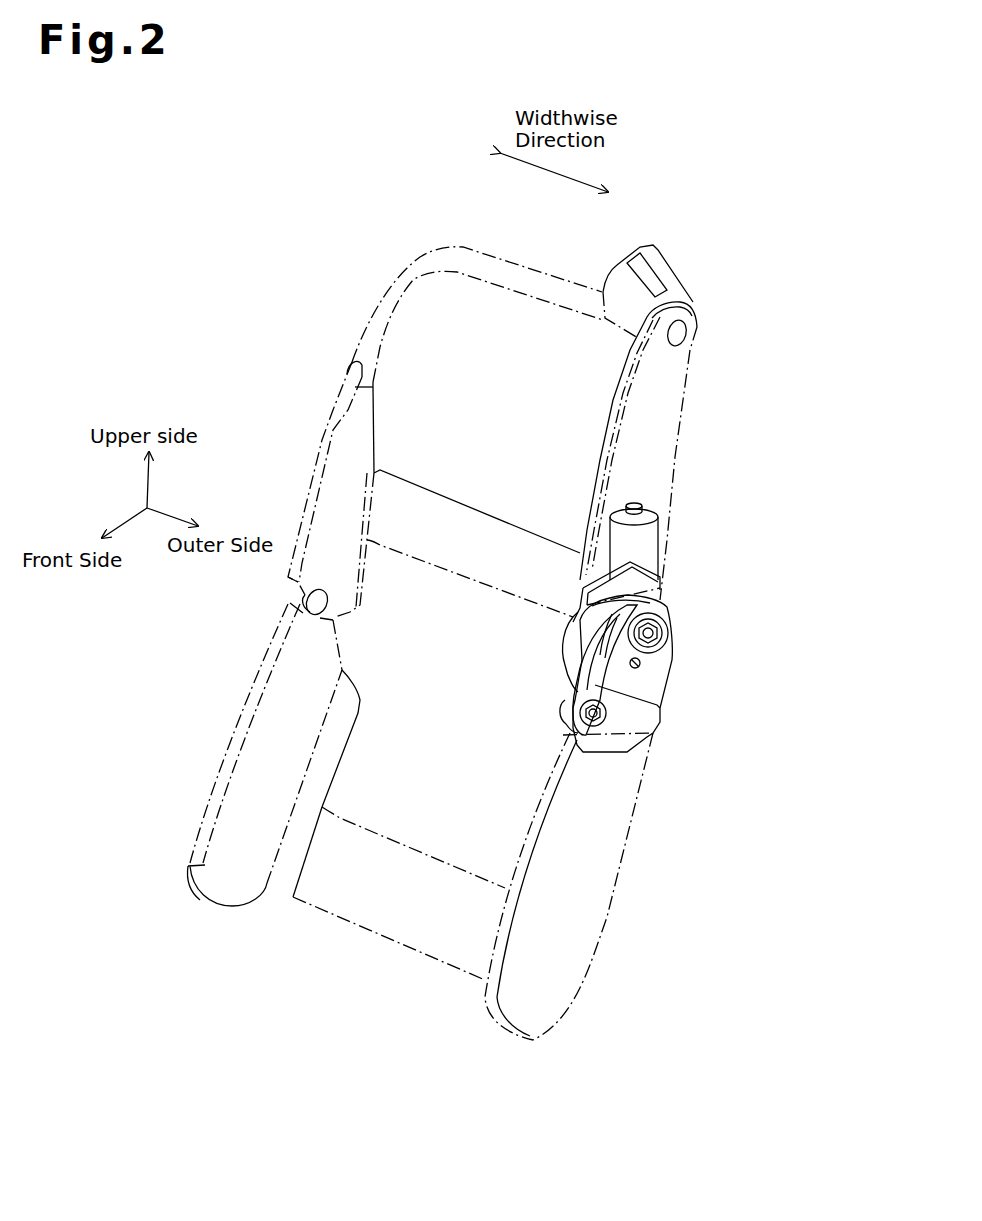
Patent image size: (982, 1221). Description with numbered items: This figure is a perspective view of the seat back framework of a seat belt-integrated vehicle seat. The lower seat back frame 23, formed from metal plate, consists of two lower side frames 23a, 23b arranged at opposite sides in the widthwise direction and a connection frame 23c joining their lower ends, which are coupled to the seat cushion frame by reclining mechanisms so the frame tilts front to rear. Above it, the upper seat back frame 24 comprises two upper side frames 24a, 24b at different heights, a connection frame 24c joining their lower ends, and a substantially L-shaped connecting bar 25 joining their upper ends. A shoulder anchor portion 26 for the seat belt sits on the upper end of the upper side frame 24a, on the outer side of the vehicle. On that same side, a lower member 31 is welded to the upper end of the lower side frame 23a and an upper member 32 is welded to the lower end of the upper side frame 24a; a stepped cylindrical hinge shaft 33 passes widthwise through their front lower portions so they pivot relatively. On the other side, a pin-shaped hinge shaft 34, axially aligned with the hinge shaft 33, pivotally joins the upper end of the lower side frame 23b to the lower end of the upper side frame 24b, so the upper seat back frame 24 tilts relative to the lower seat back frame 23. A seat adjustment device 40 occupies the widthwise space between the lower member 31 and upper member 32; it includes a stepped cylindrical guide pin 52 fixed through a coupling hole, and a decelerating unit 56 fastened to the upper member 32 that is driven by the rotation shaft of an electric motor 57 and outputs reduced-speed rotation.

The lower seat back frame 23 is at (416, 821).
The lower side frame 23a is at (608, 917).
The lower side frame 23b is at (212, 782).
The connection frame 23c is at (398, 847).
The upper seat back frame 24 is at (495, 407).
The upper side frame 24a is at (675, 465).
The upper side frame 24b is at (322, 440).
The connection frame 24c is at (463, 497).
The connecting bar 25 is at (497, 258).
The shoulder anchor portion 26 is at (665, 266).
The lower member 31 is at (665, 685).
The upper member 32 is at (574, 682).
The hinge shaft 33 is at (577, 718).
The hinge shaft 34 is at (323, 620).
The seat adjustment device 40 is at (580, 650).
The guide pin 52 is at (668, 635).
The decelerating unit 56 is at (560, 650).
The electric motor 57 is at (662, 553).